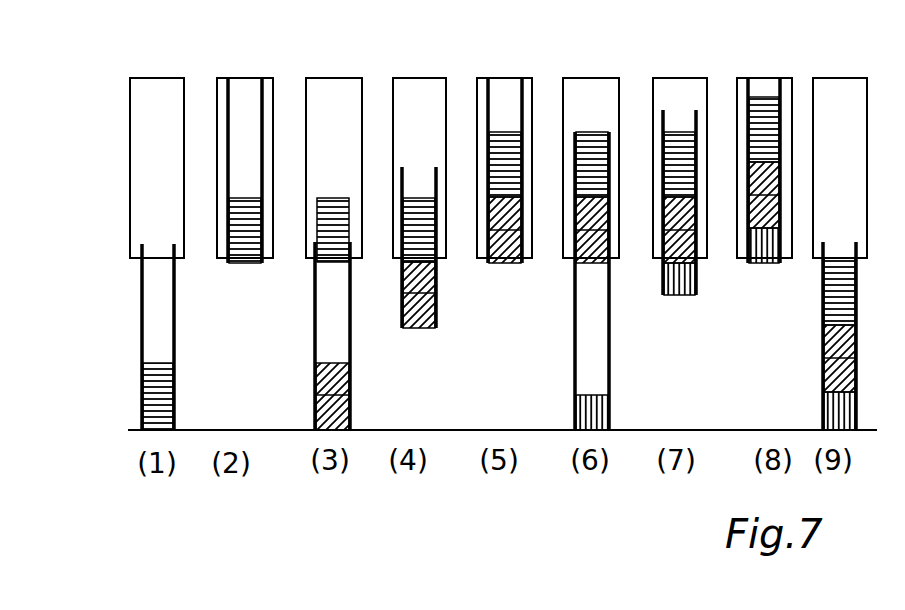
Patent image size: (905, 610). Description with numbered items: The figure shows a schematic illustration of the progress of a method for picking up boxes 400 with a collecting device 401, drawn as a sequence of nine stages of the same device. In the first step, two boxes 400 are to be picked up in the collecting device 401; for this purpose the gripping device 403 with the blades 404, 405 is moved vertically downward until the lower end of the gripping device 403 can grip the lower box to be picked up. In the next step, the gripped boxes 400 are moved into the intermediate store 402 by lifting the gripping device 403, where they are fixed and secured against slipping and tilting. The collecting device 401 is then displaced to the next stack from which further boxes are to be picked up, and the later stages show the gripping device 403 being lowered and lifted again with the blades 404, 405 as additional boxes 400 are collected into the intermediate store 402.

The collecting device 401 is at (150, 70).
The intermediate store 402 is at (116, 187).
The gripping device 403 is at (123, 308).
The blade 404 is at (178, 337).
The blade 405 is at (140, 340).
The box 400 is at (138, 415).